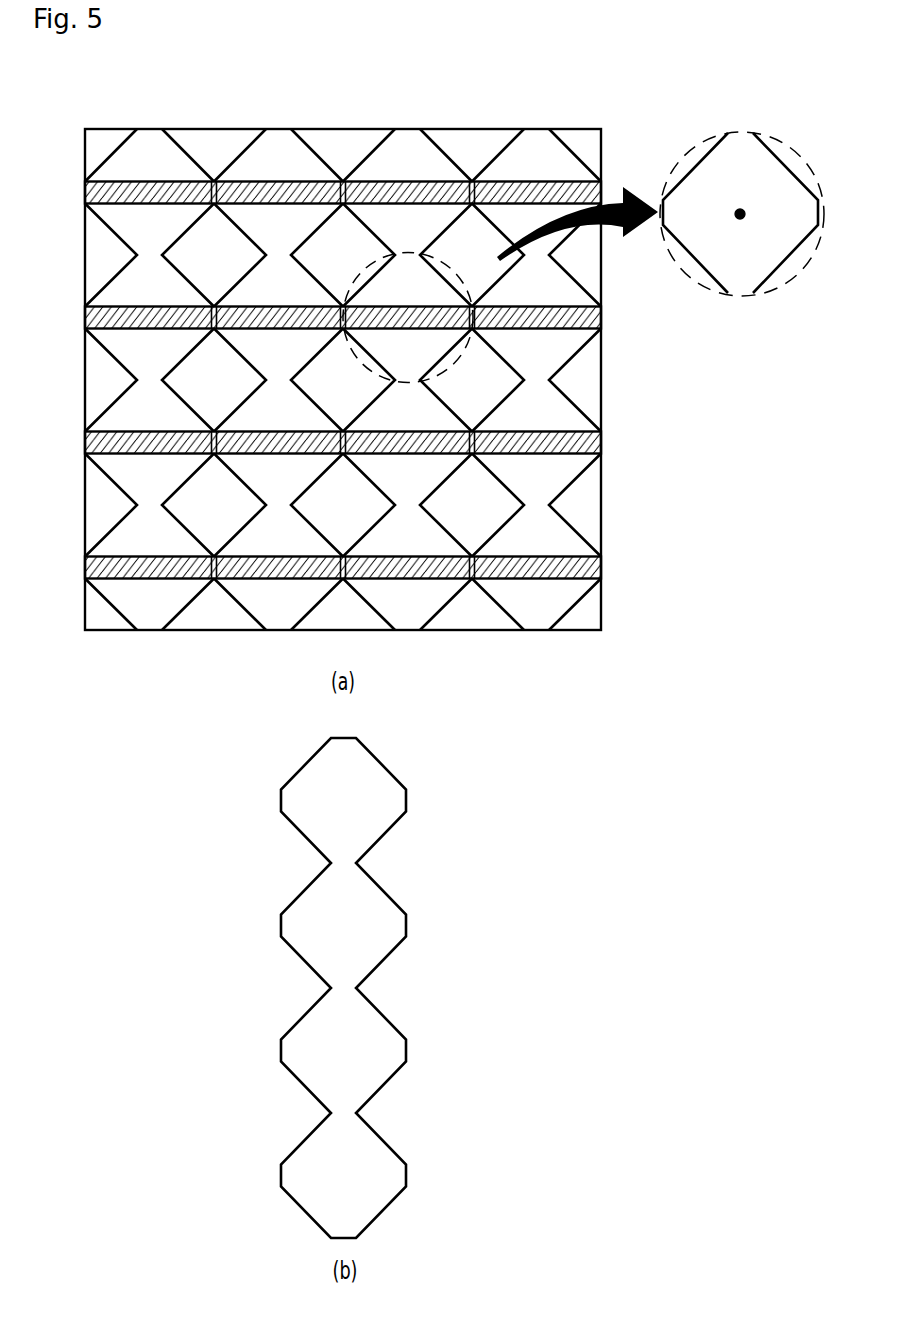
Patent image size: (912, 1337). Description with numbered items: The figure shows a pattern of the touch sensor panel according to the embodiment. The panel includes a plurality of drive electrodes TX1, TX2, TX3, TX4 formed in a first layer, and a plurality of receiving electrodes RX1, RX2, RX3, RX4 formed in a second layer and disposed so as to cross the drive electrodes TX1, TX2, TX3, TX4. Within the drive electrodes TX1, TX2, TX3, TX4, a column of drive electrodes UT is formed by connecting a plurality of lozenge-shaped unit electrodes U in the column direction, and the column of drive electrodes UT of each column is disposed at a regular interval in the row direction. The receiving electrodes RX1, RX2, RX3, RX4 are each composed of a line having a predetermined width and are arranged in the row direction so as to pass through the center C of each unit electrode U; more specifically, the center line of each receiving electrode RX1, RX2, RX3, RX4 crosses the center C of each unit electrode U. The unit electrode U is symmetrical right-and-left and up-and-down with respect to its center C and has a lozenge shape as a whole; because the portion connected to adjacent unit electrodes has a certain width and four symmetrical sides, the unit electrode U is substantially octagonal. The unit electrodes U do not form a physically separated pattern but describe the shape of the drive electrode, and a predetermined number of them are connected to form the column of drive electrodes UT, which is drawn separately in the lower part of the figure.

The drive electrode TX1 is at (149, 362).
The drive electrode TX2 is at (278, 362).
The drive electrode TX3 is at (407, 362).
The drive electrode TX4 is at (536, 362).
The receiving electrode RX1 is at (320, 193).
The receiving electrode RX2 is at (320, 318).
The receiving electrode RX3 is at (320, 443).
The receiving electrode RX4 is at (320, 568).
The unit electrode U is at (473, 292).
The center C is at (741, 212).
The column of drive electrodes UT is at (150, 613).